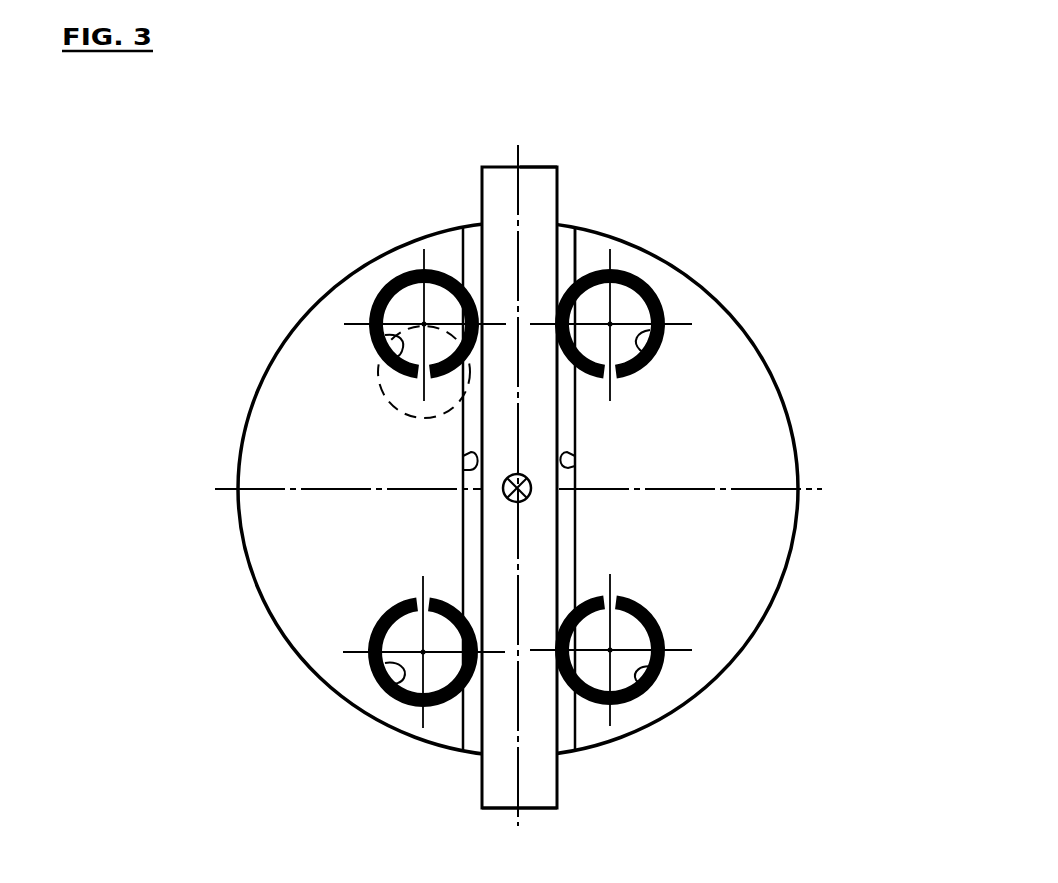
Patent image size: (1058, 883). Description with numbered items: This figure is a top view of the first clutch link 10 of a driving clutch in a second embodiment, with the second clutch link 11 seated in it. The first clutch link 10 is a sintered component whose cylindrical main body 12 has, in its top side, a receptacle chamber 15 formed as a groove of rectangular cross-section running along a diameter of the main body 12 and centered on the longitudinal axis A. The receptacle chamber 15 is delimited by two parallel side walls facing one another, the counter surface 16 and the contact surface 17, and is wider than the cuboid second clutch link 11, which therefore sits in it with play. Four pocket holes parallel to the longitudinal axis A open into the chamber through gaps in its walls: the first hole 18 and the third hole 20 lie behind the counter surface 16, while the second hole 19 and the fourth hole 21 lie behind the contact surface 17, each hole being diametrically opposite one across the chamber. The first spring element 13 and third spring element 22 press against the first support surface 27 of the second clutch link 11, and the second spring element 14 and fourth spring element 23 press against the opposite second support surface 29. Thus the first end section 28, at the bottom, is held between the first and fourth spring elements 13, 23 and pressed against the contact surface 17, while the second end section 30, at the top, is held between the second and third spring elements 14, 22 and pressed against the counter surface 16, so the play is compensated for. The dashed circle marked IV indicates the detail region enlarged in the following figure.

The first clutch link 10 is at (364, 243).
The second clutch link 11 is at (468, 150).
The main body 12 is at (420, 268).
The first spring element 13 is at (385, 663).
The second spring element 14 is at (650, 330).
The receptacle chamber 15 is at (570, 226).
The counter surface 16 is at (463, 470).
The contact surface 17 is at (575, 466).
The first hole 18 is at (410, 608).
The second hole 19 is at (650, 282).
The third hole 20 is at (383, 275).
The fourth hole 21 is at (650, 600).
The third spring element 22 is at (385, 335).
The fourth spring element 23 is at (655, 667).
The first support surface 27 is at (482, 552).
The first end section 28 is at (482, 810).
The second support surface 29 is at (557, 531).
The second end section 30 is at (557, 167).
The longitudinal axis A is at (528, 475).
The detail IV is at (378, 386).